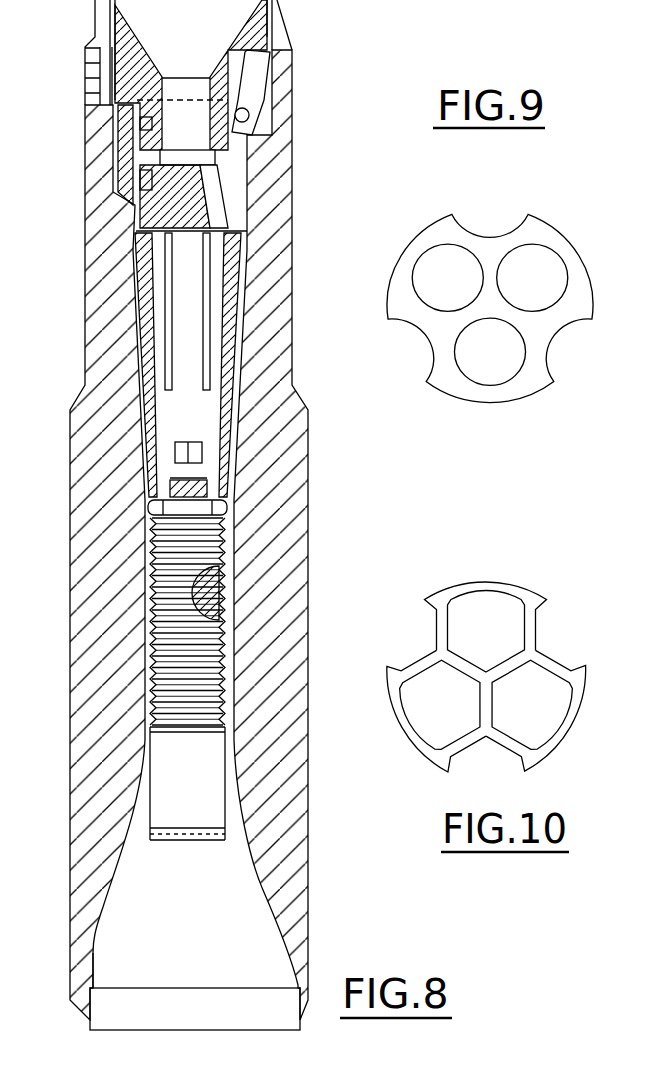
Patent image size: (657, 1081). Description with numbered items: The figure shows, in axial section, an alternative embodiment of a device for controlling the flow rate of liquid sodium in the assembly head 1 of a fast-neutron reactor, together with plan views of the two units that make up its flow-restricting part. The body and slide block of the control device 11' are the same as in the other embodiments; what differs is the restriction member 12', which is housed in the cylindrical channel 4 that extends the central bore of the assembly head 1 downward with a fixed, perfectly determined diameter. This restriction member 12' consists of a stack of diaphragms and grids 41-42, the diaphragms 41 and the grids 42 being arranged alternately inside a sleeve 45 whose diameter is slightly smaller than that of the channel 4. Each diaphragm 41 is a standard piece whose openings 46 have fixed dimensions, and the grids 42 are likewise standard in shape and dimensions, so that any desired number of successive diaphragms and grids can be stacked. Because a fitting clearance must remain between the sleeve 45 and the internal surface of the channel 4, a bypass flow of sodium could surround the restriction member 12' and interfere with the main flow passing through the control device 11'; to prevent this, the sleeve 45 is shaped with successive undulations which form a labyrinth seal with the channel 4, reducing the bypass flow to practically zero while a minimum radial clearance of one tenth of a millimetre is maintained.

In FIG. 8, the assembly head 1 is at (296, 479).
In FIG. 8, the control device 11' is at (234, 248).
In FIG. 8, the cylindrical channel 4 is at (223, 632).
In FIG. 8, the sleeve 45 is at (153, 597).
In FIG. 8, the stack of diaphragms and grids 41-42 is at (217, 583).
In FIG. 8, the restriction member 12' is at (255, 737).
In FIG. 9, the diaphragm 41 is at (526, 386).
In FIG. 9, the openings 46 is at (460, 268).
In FIG. 10, the grid 42 is at (513, 590).